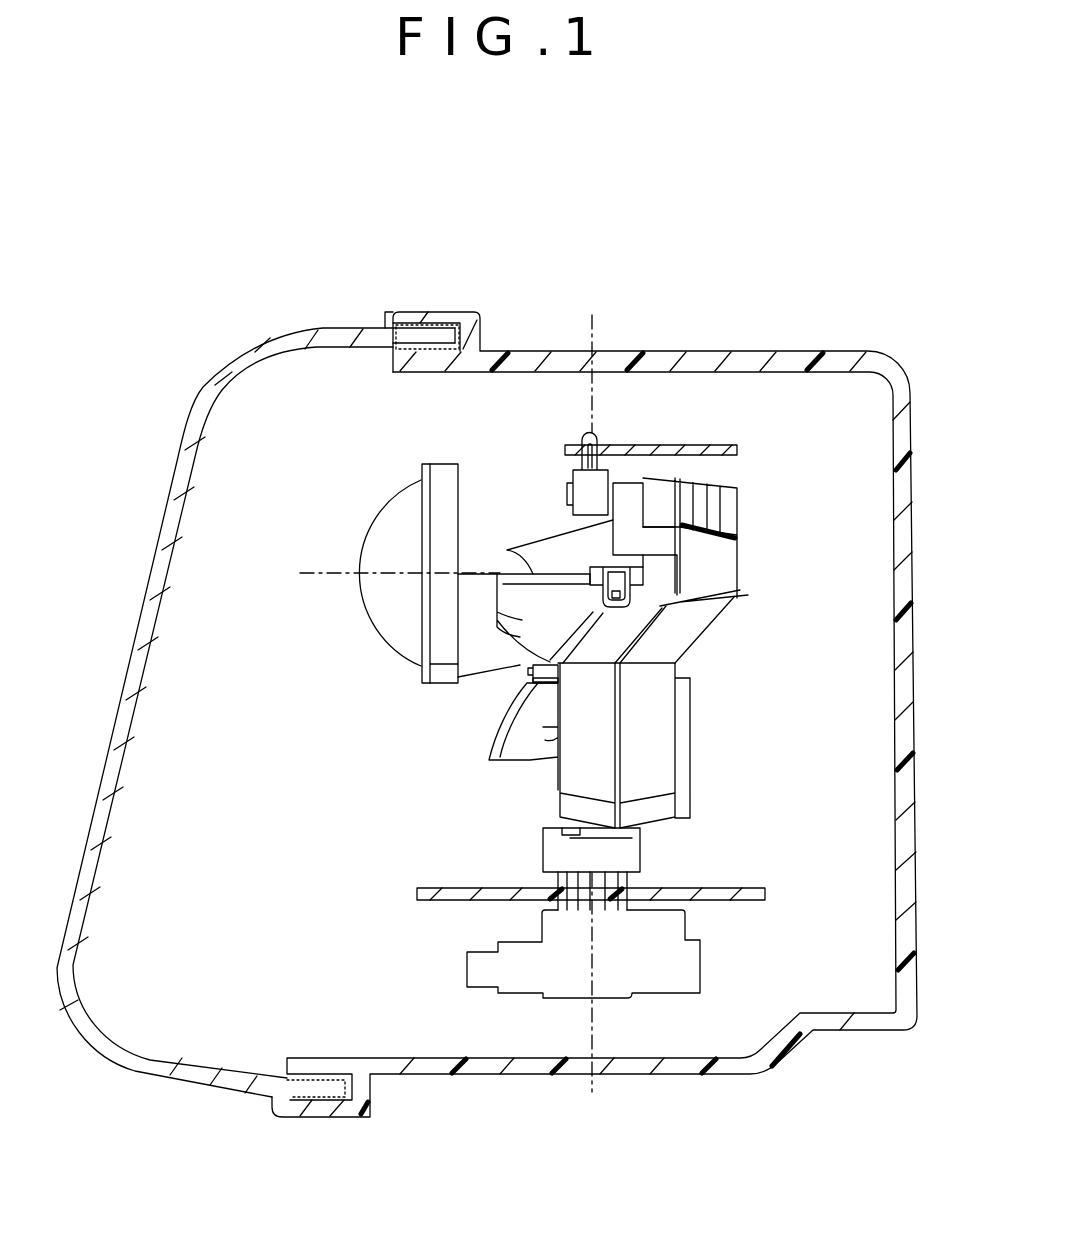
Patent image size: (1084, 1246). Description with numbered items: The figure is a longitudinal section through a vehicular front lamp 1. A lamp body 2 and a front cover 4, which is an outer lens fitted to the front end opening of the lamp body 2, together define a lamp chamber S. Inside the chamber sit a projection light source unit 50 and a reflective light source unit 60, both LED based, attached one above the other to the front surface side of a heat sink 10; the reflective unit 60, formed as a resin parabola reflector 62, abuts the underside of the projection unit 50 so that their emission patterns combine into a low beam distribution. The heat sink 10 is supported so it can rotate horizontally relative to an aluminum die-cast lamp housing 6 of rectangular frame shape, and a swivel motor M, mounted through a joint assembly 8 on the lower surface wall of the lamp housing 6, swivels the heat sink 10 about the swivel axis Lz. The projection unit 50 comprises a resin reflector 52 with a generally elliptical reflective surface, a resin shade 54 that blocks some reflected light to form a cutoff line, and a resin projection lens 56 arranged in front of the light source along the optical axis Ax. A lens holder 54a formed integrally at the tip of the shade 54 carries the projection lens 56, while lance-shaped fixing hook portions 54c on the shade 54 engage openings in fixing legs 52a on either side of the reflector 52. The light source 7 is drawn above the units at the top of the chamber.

The vehicular front lamp 1 is at (622, 235).
The lamp body 2 is at (872, 355).
The front cover (outer lens) 4 is at (240, 348).
The lamp housing 6 is at (646, 442).
The light source (bulb) 7 is at (596, 434).
The joint assembly 8 is at (640, 852).
The heat sink 10 is at (695, 663).
The projection light source unit 50 is at (503, 252).
The reflector 52 is at (552, 547).
The fixing leg 52a is at (647, 557).
The shade 54 is at (475, 588).
The lens holder 54a is at (442, 672).
The fixing hook portion 54c is at (682, 604).
The projection lens 56 is at (388, 495).
The parabola reflector 62 is at (503, 743).
The reflective light source unit 60 is at (545, 680).
The swivel motor M is at (652, 983).
The lamp chamber S is at (320, 862).
The optical axis Ax is at (381, 574).
The swivel axis Lz is at (591, 720).